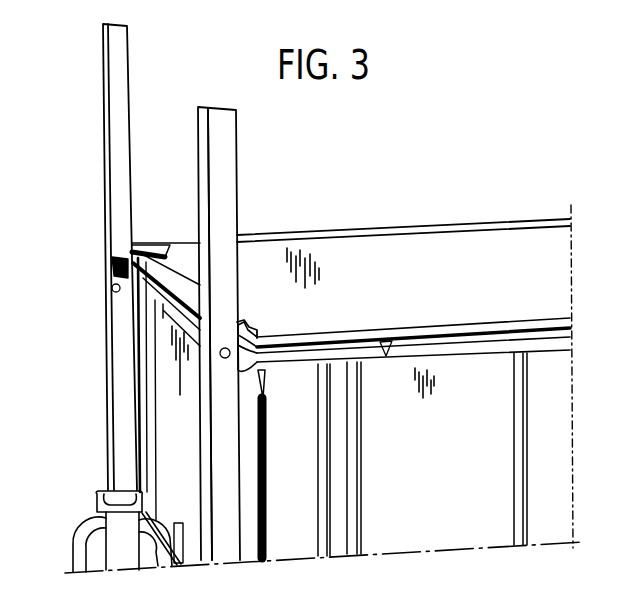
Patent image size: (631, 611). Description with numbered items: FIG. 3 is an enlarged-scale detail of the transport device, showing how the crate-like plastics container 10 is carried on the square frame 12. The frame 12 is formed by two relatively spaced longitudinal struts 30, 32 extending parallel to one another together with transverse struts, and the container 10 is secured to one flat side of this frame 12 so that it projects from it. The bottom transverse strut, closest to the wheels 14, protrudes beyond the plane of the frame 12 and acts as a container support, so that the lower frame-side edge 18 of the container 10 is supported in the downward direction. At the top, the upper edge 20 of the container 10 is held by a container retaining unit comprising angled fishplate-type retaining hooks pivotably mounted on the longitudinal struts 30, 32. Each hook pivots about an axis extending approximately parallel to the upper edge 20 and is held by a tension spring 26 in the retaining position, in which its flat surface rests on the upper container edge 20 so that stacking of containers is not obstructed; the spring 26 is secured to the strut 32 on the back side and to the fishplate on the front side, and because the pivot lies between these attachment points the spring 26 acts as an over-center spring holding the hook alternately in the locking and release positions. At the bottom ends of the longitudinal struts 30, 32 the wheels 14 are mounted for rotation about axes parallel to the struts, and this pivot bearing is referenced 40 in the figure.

The container 10 is at (347, 229).
The square frame 12 is at (238, 143).
The wheels 14 is at (82, 543).
The lower edge 18 is at (159, 528).
The upper edge 20 is at (169, 270).
The tension spring 26 is at (112, 274).
The longitudinal strut 30 is at (233, 186).
The longitudinal strut 32 is at (127, 110).
The pivot bearing 40 is at (101, 491).